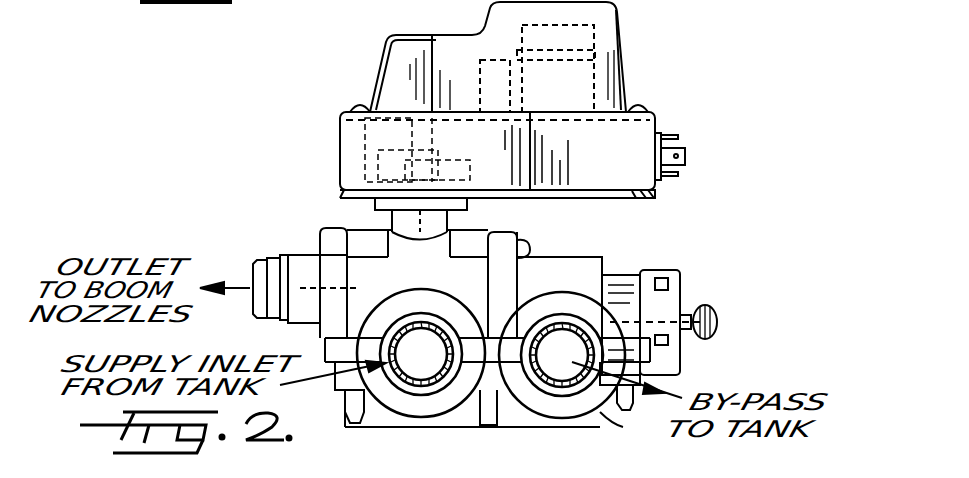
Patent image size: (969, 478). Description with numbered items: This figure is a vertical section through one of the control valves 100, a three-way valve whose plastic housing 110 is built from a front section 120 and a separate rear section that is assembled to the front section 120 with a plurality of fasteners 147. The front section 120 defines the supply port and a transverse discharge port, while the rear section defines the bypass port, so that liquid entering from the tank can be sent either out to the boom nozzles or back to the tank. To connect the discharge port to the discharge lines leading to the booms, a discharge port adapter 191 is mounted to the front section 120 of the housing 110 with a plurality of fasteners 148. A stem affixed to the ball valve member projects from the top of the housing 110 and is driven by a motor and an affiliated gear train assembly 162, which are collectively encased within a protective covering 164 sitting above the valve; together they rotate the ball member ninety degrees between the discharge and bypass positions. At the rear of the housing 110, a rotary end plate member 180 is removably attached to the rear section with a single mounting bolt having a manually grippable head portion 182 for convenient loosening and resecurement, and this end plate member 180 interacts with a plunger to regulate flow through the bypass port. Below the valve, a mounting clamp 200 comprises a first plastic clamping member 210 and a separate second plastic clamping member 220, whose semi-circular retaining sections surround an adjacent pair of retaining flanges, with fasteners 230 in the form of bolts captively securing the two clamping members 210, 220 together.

The control valve 100 is at (318, 186).
The housing 110 is at (497, 290).
The front section 120 is at (436, 424).
The fasteners 147 is at (535, 240).
The fasteners 148 is at (322, 250).
The gear train assembly 162 is at (402, 152).
The protective covering 164 is at (618, 48).
The rotary end plate member 180 is at (680, 270).
The head portion 182 is at (714, 312).
The discharge port adapter 191 is at (250, 262).
The mounting clamp 200 is at (606, 409).
The first clamping member 210 is at (572, 295).
The second clamping member 220 is at (583, 420).
The fasteners 230 is at (352, 424).